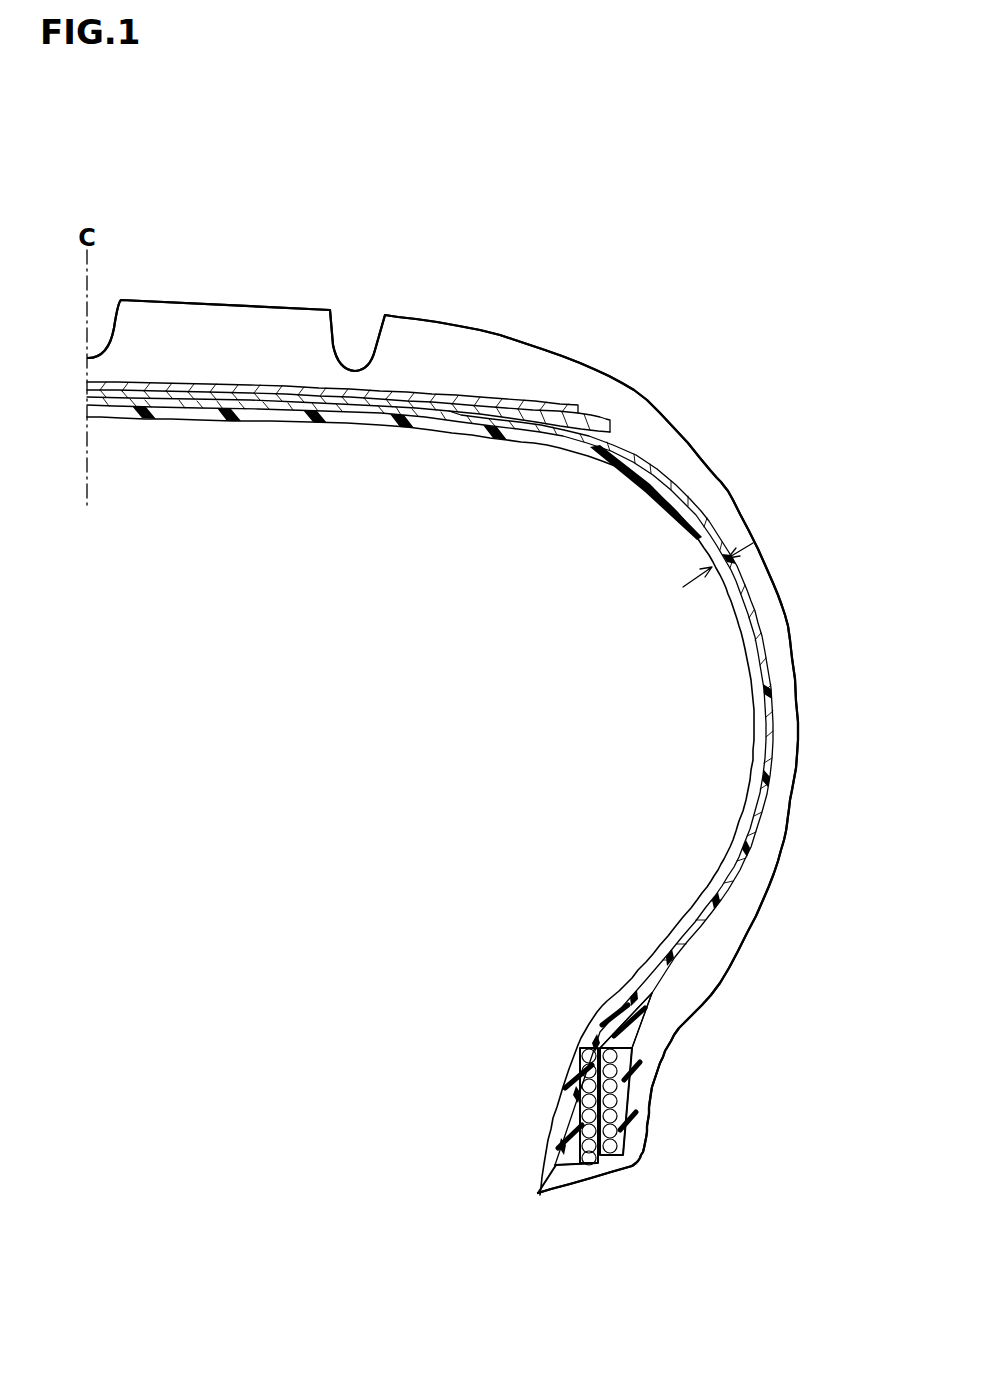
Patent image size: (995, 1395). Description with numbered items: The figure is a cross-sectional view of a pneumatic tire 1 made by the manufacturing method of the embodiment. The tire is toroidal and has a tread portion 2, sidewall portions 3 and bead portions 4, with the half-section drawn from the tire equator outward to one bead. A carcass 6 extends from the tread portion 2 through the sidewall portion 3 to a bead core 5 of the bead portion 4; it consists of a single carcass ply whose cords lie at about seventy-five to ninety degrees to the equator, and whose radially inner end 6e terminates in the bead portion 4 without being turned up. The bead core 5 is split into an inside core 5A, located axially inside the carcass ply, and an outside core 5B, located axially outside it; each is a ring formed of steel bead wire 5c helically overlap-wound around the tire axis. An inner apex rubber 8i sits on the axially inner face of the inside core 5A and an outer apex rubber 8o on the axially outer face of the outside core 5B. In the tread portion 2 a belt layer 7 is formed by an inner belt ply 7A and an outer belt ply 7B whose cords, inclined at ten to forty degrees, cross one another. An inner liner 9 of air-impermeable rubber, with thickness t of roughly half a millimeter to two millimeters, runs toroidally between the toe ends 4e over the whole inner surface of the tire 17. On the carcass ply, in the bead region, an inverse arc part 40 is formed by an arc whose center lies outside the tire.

The pneumatic tire 1 is at (514, 268).
The tread portion 2 is at (266, 290).
The sidewall portion 3 is at (807, 607).
The bead portion 4 is at (672, 1088).
The toe end 4e is at (540, 1195).
The bead core 5 is at (518, 1149).
The inside core 5A is at (580, 1104).
The outside core 5B is at (611, 1070).
The bead wire 5c is at (583, 1148).
The carcass 6 is at (768, 745).
The inner end of carcass ply 6e is at (597, 1165).
The belt layer 7 is at (348, 477).
The inner belt ply 7A is at (204, 390).
The outer belt ply 7B is at (283, 398).
The inner apex rubber 8i is at (610, 1038).
The outer apex rubber 8o is at (633, 1042).
The inner liner 9 is at (750, 650).
The inner surface of the tire 17 is at (447, 433).
The inverse arc part 40 is at (635, 1012).
The thickness of the inner liner t is at (708, 555).